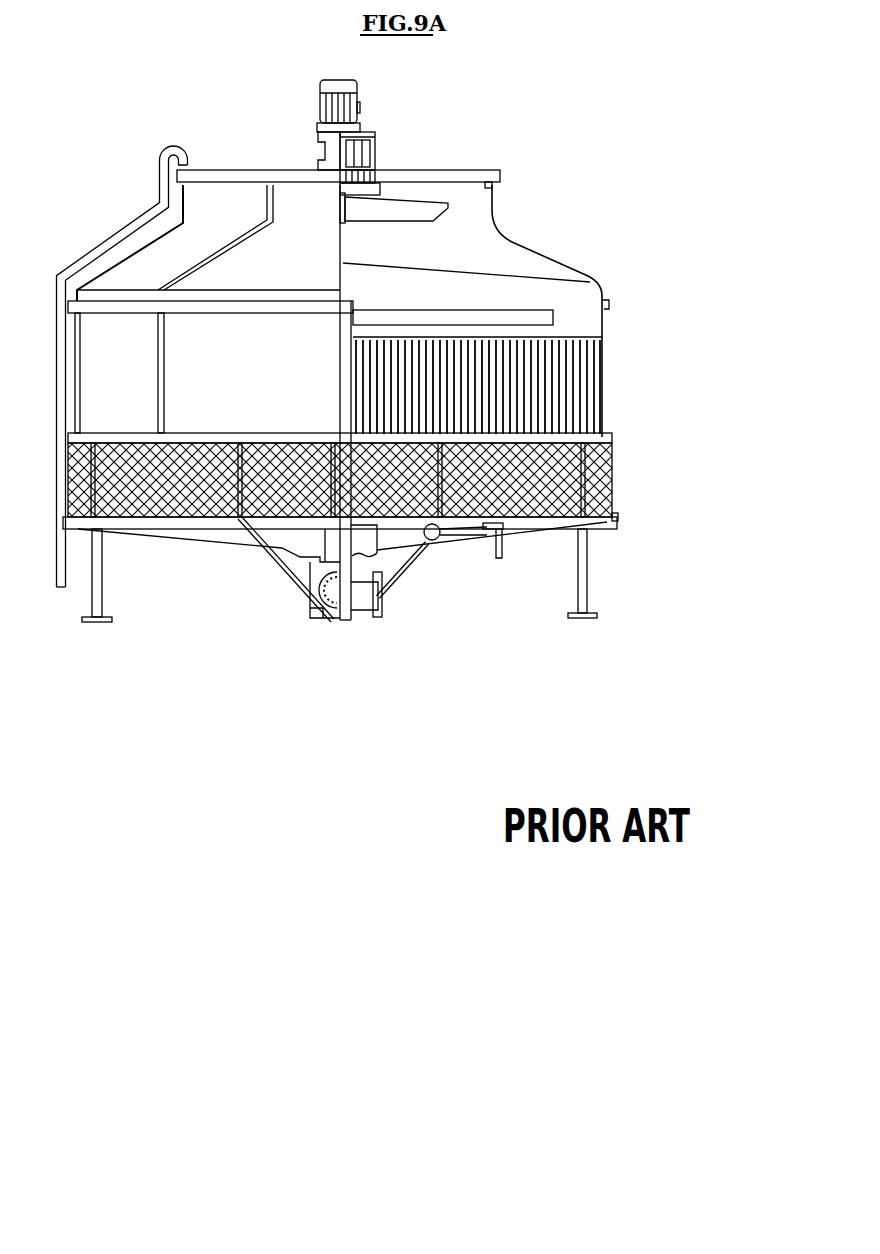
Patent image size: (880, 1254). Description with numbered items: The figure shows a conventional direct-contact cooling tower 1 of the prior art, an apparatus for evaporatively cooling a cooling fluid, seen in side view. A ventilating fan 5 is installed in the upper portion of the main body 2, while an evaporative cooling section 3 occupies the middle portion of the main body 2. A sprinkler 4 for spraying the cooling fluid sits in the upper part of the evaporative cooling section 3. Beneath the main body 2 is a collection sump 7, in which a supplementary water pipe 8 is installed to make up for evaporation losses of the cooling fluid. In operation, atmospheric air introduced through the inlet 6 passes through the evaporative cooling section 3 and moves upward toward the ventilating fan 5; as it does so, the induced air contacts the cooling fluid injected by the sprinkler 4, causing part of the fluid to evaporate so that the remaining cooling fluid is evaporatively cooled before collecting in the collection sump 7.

The cooling tower 1 is at (595, 270).
The main body 2 is at (603, 323).
The evaporative cooling section 3 is at (580, 377).
The sprinkler 4 is at (493, 317).
The ventilating fan 5 is at (407, 195).
The inlet 6 is at (608, 482).
The collection sump 7 is at (392, 540).
The supplementary water pipe 8 is at (503, 543).